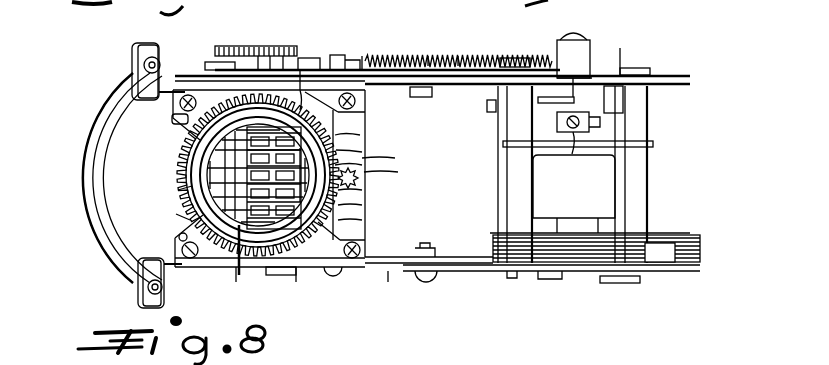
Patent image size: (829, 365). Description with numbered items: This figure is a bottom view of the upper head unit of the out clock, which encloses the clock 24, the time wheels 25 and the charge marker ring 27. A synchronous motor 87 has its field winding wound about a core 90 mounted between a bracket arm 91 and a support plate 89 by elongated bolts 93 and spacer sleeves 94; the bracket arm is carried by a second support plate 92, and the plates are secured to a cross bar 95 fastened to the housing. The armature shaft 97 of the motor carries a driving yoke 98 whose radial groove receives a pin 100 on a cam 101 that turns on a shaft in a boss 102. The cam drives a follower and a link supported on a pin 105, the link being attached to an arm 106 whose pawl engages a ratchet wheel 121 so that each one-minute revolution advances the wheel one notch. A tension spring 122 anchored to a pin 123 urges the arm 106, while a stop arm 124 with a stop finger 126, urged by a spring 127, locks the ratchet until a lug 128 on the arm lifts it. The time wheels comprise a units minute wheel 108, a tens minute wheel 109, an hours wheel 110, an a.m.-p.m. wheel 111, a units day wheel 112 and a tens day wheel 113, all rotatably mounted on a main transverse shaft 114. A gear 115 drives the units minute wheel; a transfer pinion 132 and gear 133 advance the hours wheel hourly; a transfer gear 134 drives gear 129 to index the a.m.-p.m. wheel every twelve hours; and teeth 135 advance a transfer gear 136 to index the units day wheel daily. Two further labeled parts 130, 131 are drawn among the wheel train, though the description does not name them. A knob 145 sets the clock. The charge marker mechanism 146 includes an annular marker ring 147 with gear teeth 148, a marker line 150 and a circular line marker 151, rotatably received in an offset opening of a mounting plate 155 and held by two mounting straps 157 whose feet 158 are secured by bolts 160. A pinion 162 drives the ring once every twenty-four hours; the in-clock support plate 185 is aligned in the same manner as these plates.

The clock 24 is at (90, 187).
The time wheels 25 is at (226, 254).
The charge marker ring 27 is at (172, 119).
The synchronous motor 87 is at (610, 206).
The support plate 89 is at (390, 278).
The core 90 is at (702, 251).
The bracket arm 91 is at (488, 272).
The second support plate 92 is at (618, 75).
The bolts 93 is at (516, 58).
The spacer sleeves 94 is at (517, 180).
The cross bar 95 is at (498, 110).
The armature shaft 97 is at (572, 154).
The driving yoke 98 is at (605, 124).
The pin 100 is at (538, 100).
The cam 101 is at (574, 77).
The boss 102 is at (582, 36).
The pin 105 is at (650, 94).
The arm 106 is at (458, 54).
The units minute wheel 108 is at (364, 140).
The tens minute wheel 109 is at (364, 148).
The hours wheel 110 is at (364, 166).
The a.m.-p.m. wheel 111 is at (366, 188).
The units day wheel 112 is at (365, 206).
The tens day wheel 113 is at (366, 220).
The main transverse shaft 114 is at (278, 275).
The gear 115 is at (192, 142).
The ratchet wheel 121 is at (314, 58).
The tension spring 122 is at (400, 56).
The pin 123 is at (365, 56).
The stop arm 124 is at (430, 54).
The stop finger 126 is at (274, 56).
The spring 127 is at (355, 58).
The lug 128 is at (335, 55).
The gear 129 is at (190, 178).
The rod 130 is at (360, 128).
The frame plate 131 is at (353, 110).
The transfer pinion 132 is at (398, 156).
The gear 133 is at (188, 150).
The transfer gear 134 is at (358, 178).
The teeth 135 is at (182, 213).
The transfer gear 136 is at (182, 237).
The knob 145 is at (230, 46).
The charge marker mechanism 146 is at (178, 192).
The annular marker ring 147 is at (190, 160).
The gear teeth 148 is at (337, 272).
The marker line 150 is at (232, 78).
The circular line marker 151 is at (242, 270).
The mounting plate 155 is at (297, 270).
The mounting straps 157 is at (300, 70).
The feet 158 is at (204, 78).
The bolts 160 is at (176, 268).
The pinion 162 is at (400, 172).
The support plate 185 is at (404, 344).